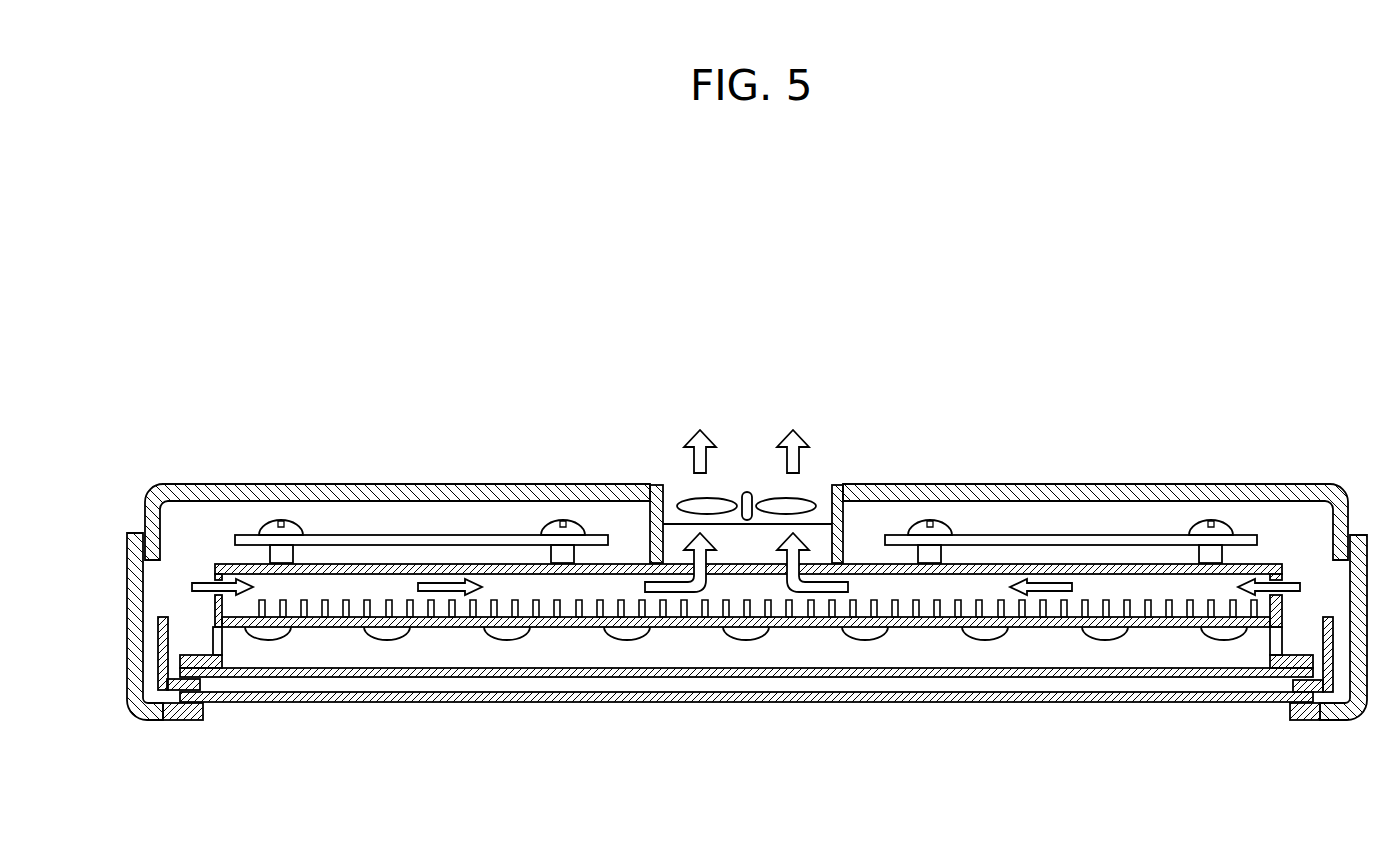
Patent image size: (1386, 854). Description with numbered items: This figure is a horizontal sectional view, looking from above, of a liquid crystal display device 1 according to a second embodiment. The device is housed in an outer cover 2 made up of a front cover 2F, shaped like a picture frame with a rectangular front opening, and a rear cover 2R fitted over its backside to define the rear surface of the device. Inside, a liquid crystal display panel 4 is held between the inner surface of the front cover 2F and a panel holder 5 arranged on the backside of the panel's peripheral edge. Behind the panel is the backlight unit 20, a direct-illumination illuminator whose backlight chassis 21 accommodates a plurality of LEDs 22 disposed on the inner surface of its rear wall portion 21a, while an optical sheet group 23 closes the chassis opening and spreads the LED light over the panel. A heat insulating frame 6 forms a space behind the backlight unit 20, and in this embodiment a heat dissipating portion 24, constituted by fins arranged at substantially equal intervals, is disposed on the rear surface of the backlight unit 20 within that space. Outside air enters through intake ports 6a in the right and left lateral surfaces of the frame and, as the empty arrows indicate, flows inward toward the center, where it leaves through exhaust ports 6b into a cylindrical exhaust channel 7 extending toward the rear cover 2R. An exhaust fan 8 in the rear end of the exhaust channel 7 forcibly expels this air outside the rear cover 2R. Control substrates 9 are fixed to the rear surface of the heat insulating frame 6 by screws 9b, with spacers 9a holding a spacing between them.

The liquid crystal display device 1 is at (321, 199).
The outer cover 2 is at (237, 386).
The front cover 2F is at (128, 532).
The rear cover 2R is at (213, 484).
The liquid crystal display panel 4 is at (508, 703).
The panel holder 5 is at (158, 691).
The heat insulating frame 6 is at (1185, 576).
The intake ports 6a is at (220, 577).
The exhaust ports 6b is at (718, 572).
The exhaust channel 7 is at (660, 540).
The exhaust fan 8 is at (807, 493).
The control substrate 9 is at (432, 535).
The spacers 9a is at (295, 553).
The screws 9b is at (282, 520).
The backlight unit 20 is at (652, 694).
The backlight chassis 21 is at (455, 643).
The rear wall portion 21a is at (888, 605).
The LEDs 22 is at (262, 640).
The optical sheet group 23 is at (573, 678).
The heat dissipating portion 24 is at (338, 608).